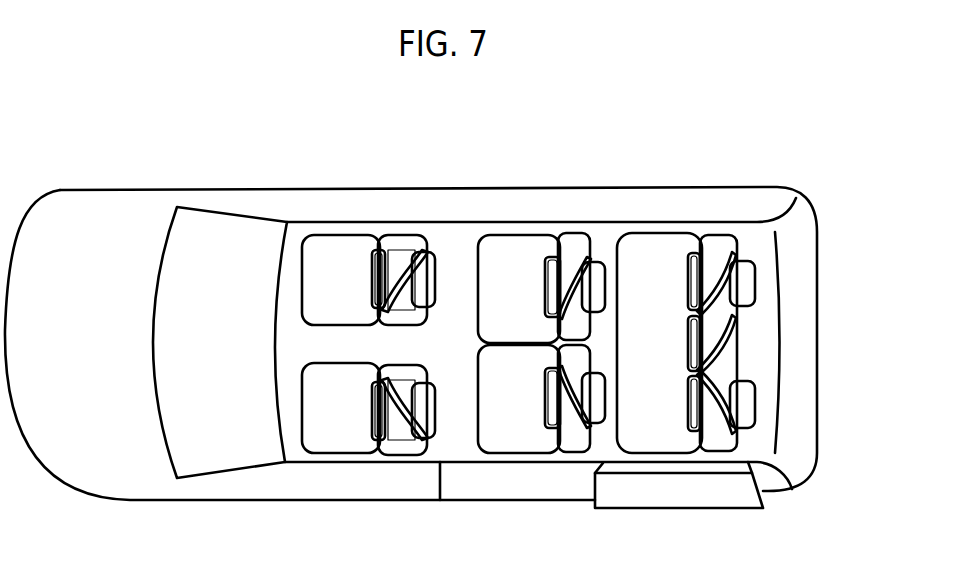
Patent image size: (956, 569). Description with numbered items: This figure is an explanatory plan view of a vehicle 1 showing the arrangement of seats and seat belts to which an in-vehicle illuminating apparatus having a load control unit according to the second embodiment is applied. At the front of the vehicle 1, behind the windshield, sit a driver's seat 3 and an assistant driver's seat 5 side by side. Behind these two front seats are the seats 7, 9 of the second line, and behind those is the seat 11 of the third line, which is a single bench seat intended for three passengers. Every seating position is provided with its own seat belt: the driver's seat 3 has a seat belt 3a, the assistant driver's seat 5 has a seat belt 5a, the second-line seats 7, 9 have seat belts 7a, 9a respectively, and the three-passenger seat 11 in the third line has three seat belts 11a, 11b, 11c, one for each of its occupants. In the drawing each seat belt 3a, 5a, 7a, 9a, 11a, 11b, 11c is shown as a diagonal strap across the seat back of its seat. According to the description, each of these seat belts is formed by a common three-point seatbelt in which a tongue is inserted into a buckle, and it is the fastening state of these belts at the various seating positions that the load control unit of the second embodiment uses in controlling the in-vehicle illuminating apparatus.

The vehicle 1 is at (108, 200).
The driver's seat 3 is at (330, 245).
The seat belt 3a is at (397, 256).
The assistant driver's seat 5 is at (337, 443).
The seat belt 5a is at (398, 428).
The seat 7 is at (497, 445).
The seat belt 7a is at (573, 432).
The seat 9 is at (500, 245).
The seat belt 9a is at (574, 268).
The seat 11 is at (728, 365).
The seat belt 11a is at (720, 432).
The seat belt 11b is at (737, 326).
The seat belt 11c is at (718, 258).